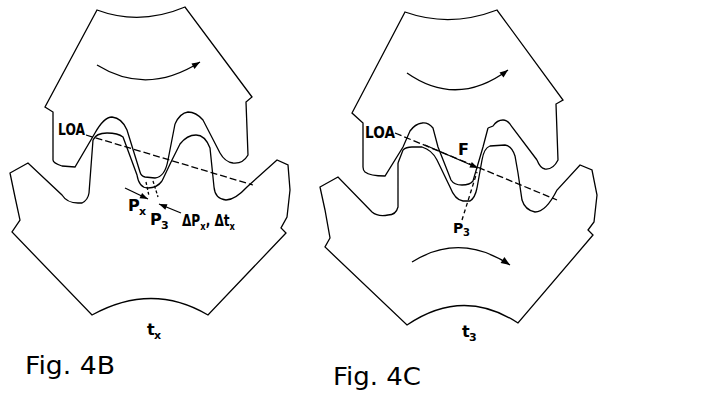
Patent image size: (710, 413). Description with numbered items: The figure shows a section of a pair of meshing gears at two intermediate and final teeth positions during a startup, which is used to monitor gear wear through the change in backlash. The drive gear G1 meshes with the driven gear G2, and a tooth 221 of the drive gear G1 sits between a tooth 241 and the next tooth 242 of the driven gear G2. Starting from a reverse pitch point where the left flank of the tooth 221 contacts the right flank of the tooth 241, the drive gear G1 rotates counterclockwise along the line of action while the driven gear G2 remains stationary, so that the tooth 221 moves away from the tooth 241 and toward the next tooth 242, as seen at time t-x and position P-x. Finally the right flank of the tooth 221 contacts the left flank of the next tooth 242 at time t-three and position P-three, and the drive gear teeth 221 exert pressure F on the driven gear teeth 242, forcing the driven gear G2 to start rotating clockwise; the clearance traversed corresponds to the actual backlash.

In FIG. 4B, the tooth of the drive gear 221 is at (172, 143).
In FIG. 4C, the tooth of the drive gear 221 is at (482, 145).
In FIG. 4B, the tooth of the driven gear 241 is at (91, 160).
In FIG. 4C, the tooth of the driven gear 241 is at (400, 177).
In FIG. 4B, the next tooth of the driven gear 242 is at (178, 157).
In FIG. 4C, the next tooth of the driven gear 242 is at (478, 175).
In FIG. 4B, the drive gear G1 is at (156, 60).
In FIG. 4C, the drive gear G1 is at (469, 66).
In FIG. 4B, the driven gear G2 is at (168, 269).
In FIG. 4C, the driven gear G2 is at (475, 291).